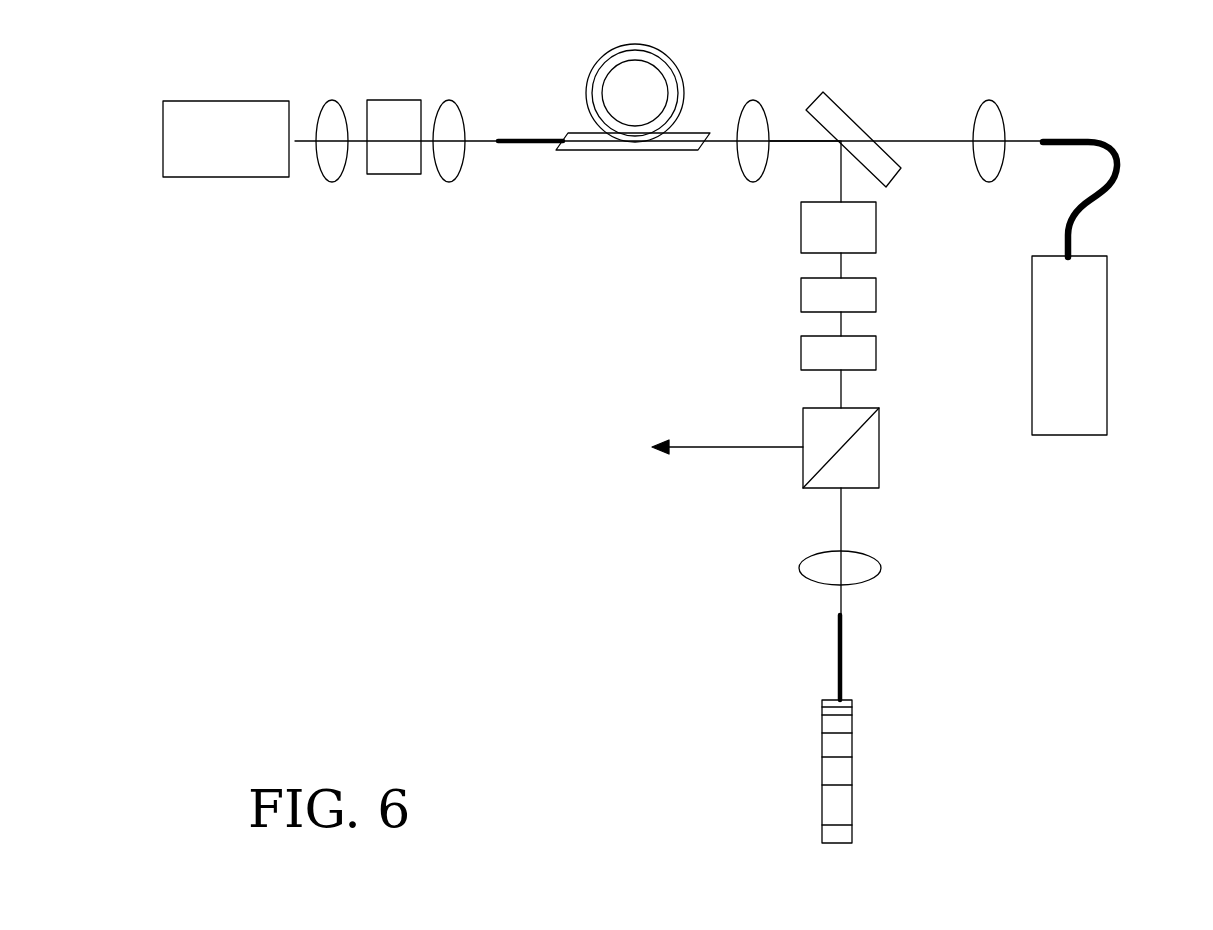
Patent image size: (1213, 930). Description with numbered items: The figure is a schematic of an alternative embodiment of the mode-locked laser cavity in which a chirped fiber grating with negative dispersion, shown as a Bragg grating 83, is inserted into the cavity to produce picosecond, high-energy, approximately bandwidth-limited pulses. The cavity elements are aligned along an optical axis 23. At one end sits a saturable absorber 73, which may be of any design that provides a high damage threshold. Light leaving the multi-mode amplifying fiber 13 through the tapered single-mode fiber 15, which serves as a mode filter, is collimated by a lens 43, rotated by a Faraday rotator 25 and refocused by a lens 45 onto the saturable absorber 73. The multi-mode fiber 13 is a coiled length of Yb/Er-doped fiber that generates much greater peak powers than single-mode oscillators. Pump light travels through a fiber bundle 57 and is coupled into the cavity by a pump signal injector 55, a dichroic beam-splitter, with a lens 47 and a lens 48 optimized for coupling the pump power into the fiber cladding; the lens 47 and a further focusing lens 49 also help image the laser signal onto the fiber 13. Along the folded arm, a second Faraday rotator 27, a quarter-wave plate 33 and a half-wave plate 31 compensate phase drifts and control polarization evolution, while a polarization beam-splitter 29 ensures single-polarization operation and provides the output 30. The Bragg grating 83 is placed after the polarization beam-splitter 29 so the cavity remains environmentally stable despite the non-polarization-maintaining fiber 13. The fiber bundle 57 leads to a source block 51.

The saturable absorber 73 is at (215, 101).
The lens 45 is at (333, 98).
The Faraday rotator 25 is at (388, 100).
The lens 43 is at (450, 180).
The single-mode fiber 15 is at (520, 145).
The multi-mode amplifying fiber 13 is at (684, 72).
The focusing lens 47 is at (755, 100).
The optical axis 23 is at (803, 145).
The pump signal injector 55 is at (845, 100).
The lens 48 is at (992, 102).
The fiber bundle 57 is at (1108, 146).
The detector 51 is at (1107, 360).
The Faraday rotator 27 is at (876, 225).
The quarter-wave plate 33 is at (876, 295).
The half-wave plate 31 is at (876, 350).
The polarization beam-splitter 29 is at (879, 443).
The output 30 is at (755, 447).
The focusing lens 49 is at (881, 568).
The Bragg grating 83 is at (852, 772).